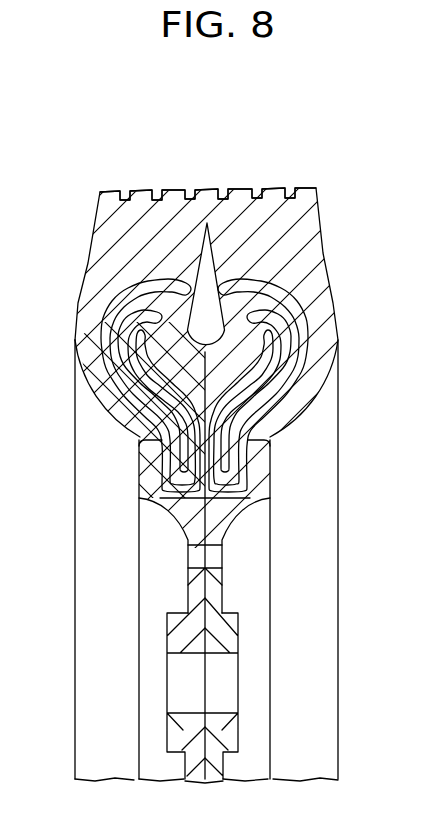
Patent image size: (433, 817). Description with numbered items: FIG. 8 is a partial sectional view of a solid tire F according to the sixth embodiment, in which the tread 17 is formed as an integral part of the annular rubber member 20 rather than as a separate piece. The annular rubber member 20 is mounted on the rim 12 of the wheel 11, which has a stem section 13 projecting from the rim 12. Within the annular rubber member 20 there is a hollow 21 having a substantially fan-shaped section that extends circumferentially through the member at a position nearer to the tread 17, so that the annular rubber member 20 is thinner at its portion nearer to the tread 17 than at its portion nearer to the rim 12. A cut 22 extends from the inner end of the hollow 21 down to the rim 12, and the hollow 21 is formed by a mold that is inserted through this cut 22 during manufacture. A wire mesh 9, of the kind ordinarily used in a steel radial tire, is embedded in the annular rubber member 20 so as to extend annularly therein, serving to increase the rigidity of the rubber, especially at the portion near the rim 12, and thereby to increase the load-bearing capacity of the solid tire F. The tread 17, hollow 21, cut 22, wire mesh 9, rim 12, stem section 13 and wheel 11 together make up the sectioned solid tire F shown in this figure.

The wire mesh 9 is at (272, 408).
The wheel 11 is at (221, 623).
The rim 12 is at (217, 511).
The stem section 13 is at (213, 550).
The tread 17 is at (202, 200).
The annular rubber member 20 is at (289, 253).
The hollow 21 is at (203, 272).
The cut 22 is at (222, 357).
The solid tire F is at (312, 171).